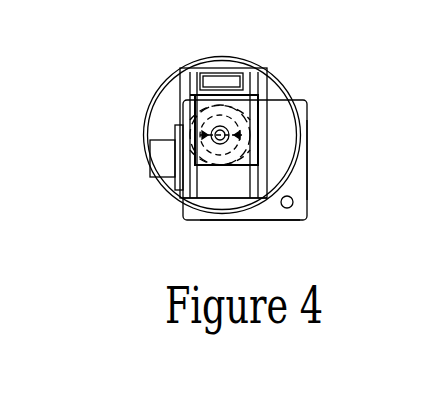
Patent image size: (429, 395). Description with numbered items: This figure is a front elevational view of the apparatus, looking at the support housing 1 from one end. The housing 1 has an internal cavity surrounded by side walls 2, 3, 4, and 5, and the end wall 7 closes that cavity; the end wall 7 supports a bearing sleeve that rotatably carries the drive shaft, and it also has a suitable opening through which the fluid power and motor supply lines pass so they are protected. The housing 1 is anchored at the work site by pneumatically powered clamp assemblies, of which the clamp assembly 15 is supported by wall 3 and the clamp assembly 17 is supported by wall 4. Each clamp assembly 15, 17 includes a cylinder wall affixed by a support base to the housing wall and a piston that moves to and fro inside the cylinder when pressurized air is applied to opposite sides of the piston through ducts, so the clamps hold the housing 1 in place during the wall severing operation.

The support housing 1 is at (267, 133).
The side wall 2 is at (270, 126).
The side wall 3 is at (347, 160).
The side wall 4 is at (276, 244).
The side wall 5 is at (186, 149).
The end wall 7 is at (293, 188).
The pneumatically powered clamp assembly 15 is at (185, 56).
The pneumatically powered clamp assembly 17 is at (126, 143).